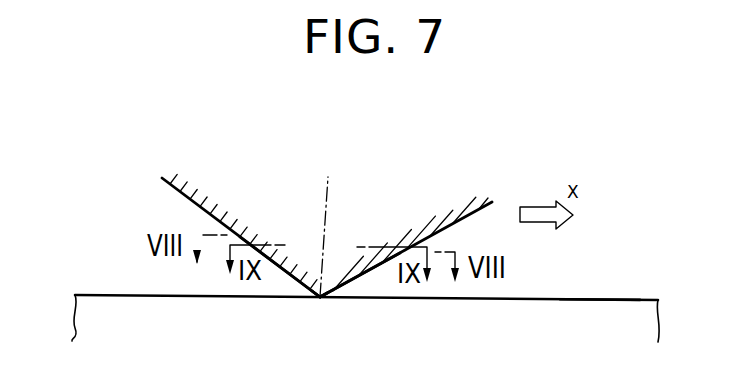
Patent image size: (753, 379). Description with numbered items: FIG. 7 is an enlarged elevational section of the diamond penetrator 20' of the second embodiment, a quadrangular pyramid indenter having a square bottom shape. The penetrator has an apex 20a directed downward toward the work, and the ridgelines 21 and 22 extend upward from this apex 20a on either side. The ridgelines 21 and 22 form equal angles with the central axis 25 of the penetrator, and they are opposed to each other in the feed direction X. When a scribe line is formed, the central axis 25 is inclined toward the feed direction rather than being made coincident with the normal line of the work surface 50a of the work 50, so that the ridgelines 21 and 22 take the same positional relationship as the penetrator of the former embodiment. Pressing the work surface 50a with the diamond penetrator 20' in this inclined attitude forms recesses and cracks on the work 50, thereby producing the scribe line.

The diamond penetrator 20' is at (339, 207).
The apex 20a is at (321, 299).
The first ridgeline 21 is at (295, 278).
The second ridgeline 22 is at (373, 273).
The central axis 25 is at (327, 198).
The work 50 is at (633, 325).
The work surface 50a is at (618, 300).